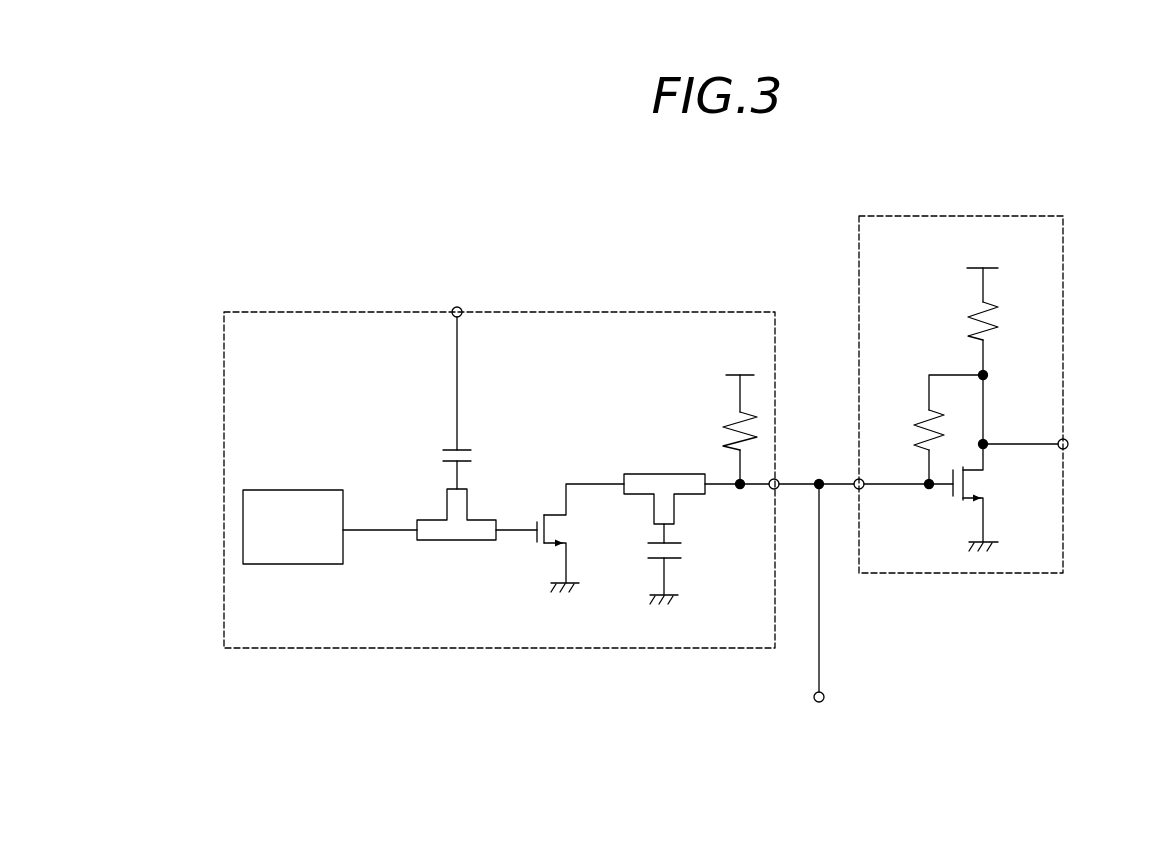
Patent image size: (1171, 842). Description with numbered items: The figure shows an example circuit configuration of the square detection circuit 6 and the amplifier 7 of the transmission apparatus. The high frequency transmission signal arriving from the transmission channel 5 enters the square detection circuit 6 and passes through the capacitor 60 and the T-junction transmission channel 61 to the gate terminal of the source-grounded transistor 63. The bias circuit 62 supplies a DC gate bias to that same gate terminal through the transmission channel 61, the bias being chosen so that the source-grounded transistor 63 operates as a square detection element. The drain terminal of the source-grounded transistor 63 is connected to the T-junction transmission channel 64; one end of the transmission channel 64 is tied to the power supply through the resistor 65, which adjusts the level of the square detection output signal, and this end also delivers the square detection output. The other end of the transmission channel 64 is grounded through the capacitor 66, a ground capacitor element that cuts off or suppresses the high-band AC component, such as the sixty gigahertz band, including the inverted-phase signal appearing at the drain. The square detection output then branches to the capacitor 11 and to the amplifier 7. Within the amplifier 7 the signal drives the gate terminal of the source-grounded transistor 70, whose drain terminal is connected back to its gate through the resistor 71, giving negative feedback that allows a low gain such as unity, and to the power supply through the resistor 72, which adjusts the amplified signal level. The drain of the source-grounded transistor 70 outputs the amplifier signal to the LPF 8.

The transmission channel 5 is at (458, 355).
The square detection circuit 6 is at (494, 652).
The amplifier 7 is at (960, 577).
The Low Pass Filter (LPF) 8 is at (1068, 445).
The capacitor 11 is at (825, 612).
The capacitor 60 is at (479, 452).
The transmission channel 61 is at (471, 535).
The bias circuit 62 is at (270, 494).
The source-grounded transistor 63 is at (564, 533).
The transmission channel 64 is at (671, 481).
The resistor 65 is at (721, 434).
The capacitor 66 is at (687, 549).
The source-grounded transistor 70 is at (988, 488).
The resistor 71 is at (906, 432).
The resistor 72 is at (969, 318).